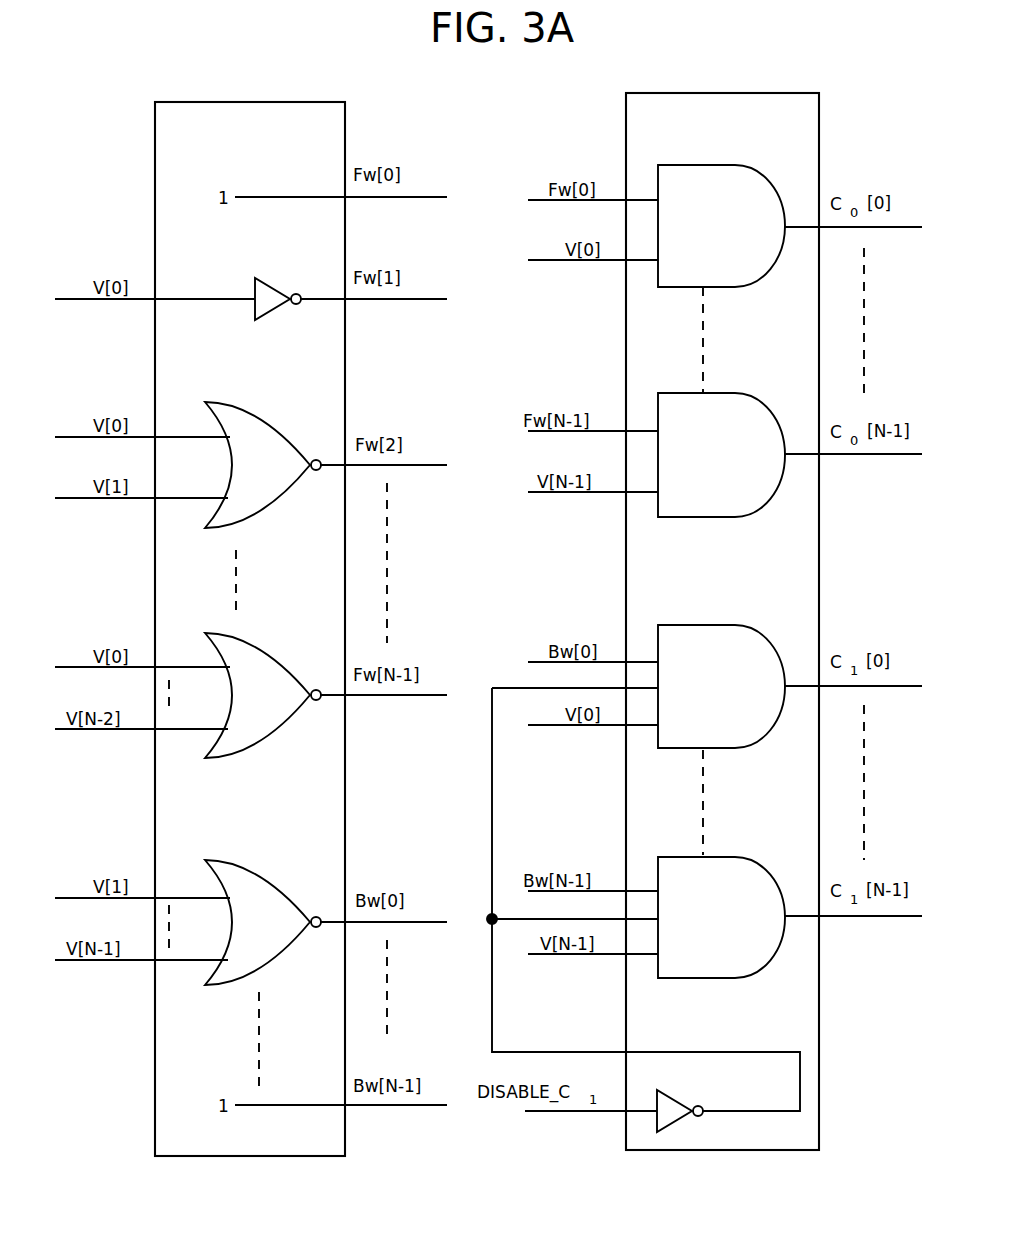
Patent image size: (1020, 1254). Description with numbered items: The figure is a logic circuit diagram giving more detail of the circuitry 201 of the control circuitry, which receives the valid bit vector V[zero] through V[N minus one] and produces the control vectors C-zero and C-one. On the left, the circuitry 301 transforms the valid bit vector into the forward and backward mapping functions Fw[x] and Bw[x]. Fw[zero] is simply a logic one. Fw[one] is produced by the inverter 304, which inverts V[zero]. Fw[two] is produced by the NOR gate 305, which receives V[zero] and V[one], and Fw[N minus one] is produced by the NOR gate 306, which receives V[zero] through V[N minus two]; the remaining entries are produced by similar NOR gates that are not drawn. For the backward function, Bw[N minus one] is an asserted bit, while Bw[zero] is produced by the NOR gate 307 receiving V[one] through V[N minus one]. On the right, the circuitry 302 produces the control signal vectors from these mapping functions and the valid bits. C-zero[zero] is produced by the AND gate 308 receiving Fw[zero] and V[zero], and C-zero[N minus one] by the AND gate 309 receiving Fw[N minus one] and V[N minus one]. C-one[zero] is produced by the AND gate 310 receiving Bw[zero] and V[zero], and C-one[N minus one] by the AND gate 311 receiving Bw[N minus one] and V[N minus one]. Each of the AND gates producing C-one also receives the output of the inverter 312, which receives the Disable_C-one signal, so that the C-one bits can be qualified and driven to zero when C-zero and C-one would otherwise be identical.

The circuitry 201 is at (190, 63).
The circuitry 301 is at (288, 101).
The circuitry 302 is at (762, 92).
The inverter 304 is at (280, 286).
The NOR gate 305 is at (262, 405).
The NOR gate 306 is at (256, 634).
The NOR gate 307 is at (256, 861).
The AND gate 308 is at (725, 164).
The AND gate 309 is at (725, 392).
The AND gate 310 is at (725, 624).
The AND gate 311 is at (725, 856).
The inverter 312 is at (683, 1097).